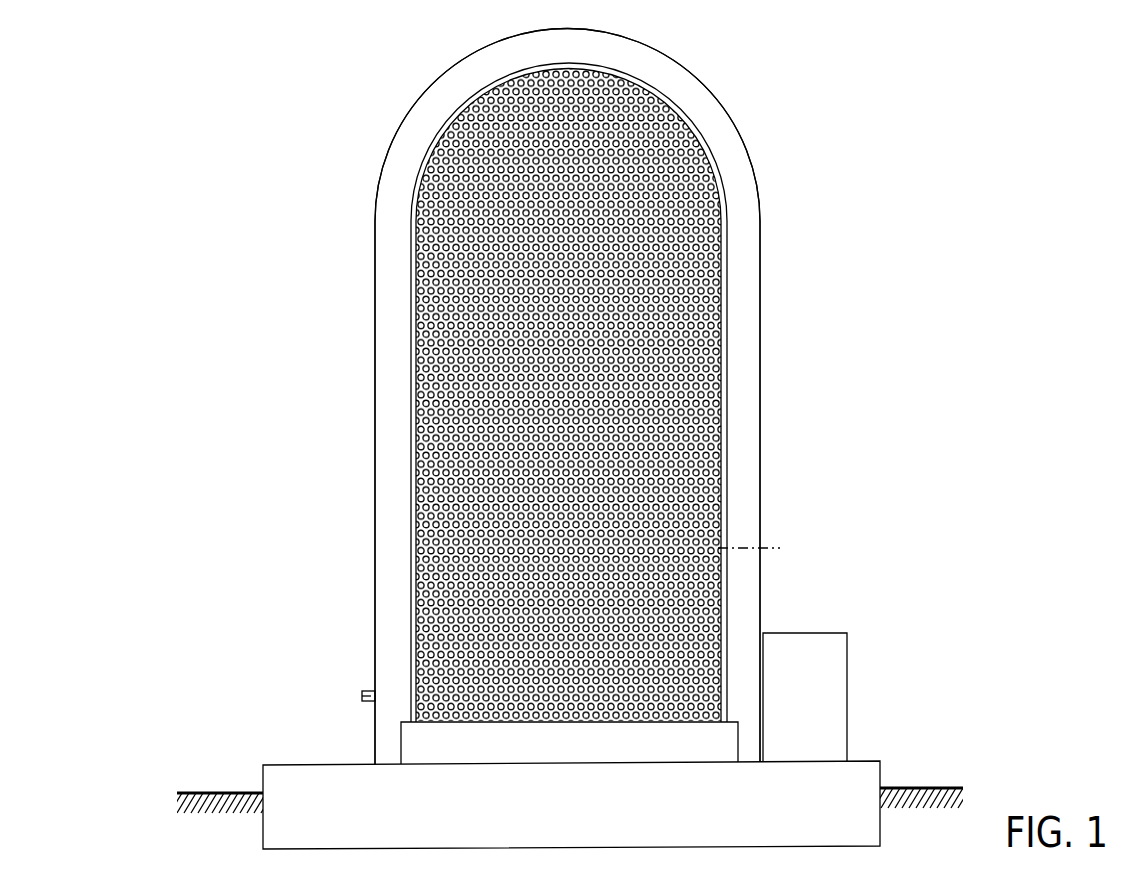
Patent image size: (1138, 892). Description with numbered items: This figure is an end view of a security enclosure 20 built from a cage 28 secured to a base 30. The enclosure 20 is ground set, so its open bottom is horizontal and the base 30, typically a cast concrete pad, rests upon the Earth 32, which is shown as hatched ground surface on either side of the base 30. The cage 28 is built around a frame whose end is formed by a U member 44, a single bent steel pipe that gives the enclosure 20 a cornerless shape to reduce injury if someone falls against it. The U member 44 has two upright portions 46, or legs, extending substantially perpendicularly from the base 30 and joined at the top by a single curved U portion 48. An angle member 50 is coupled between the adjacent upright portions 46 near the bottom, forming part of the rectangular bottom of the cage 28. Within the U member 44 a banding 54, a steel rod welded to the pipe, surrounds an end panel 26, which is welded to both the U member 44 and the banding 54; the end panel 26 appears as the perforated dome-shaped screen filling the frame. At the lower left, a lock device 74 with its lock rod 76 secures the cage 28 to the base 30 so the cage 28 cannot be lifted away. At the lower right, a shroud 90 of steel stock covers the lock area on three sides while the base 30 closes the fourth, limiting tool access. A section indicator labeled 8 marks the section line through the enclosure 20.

The security enclosure 20 is at (1051, 619).
The cage 28 is at (866, 211).
The end panel 26 is at (707, 180).
The base 30 is at (298, 778).
The Earth 32 is at (222, 792).
The U member 44 is at (737, 293).
The upright portion 46 is at (385, 507).
The U portion 48 is at (675, 87).
The angle member 50 is at (437, 730).
The banding 54 is at (722, 383).
The lock device 74 is at (365, 693).
The lock rod 76 is at (362, 697).
The shroud 90 is at (835, 675).
The section line 8 is at (766, 548).